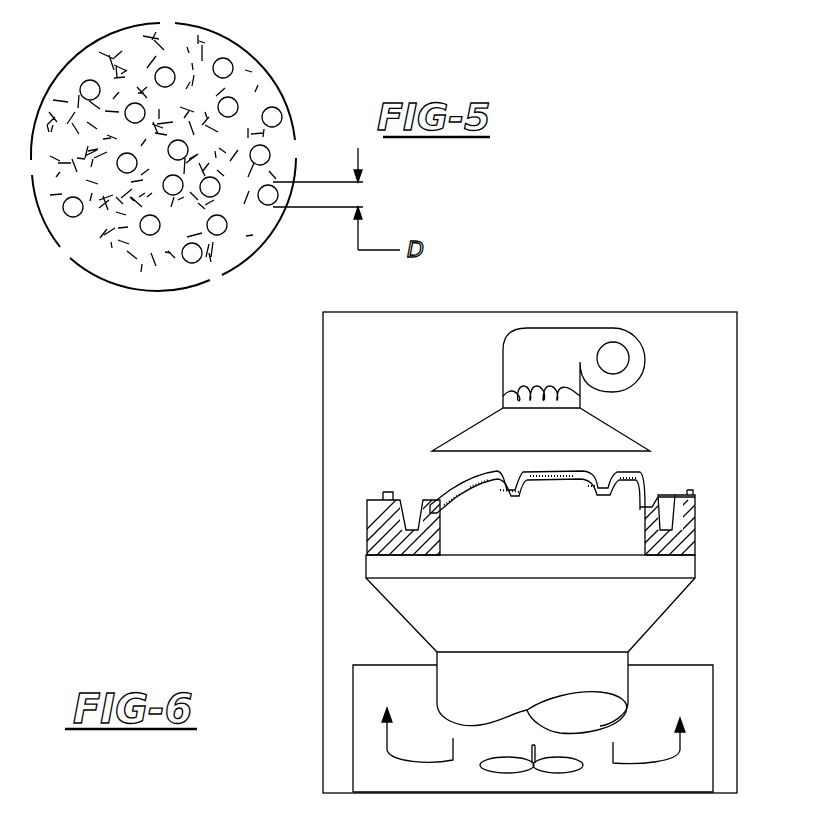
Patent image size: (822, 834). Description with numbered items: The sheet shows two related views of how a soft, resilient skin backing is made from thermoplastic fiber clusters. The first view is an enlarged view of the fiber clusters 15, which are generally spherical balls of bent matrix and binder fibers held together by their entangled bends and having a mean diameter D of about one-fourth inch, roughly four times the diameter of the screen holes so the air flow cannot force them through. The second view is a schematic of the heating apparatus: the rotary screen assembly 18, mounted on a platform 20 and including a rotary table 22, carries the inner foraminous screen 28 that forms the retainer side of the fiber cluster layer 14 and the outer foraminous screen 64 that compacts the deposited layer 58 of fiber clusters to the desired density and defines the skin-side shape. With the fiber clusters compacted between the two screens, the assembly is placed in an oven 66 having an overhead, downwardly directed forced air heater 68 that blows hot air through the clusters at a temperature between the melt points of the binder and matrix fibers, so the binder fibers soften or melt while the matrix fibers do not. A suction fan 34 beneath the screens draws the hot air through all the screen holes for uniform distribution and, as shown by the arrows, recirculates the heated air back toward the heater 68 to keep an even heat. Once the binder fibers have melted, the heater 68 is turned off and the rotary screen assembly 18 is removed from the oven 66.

In FIG. 6, the fiber cluster layer 14 is at (645, 472).
In FIG. 5, the fiber clusters 15 is at (270, 154).
In FIG. 6, the rotary screen assembly 18 is at (367, 500).
In FIG. 6, the platform 20 is at (370, 665).
In FIG. 6, the rotary table 22 is at (367, 538).
In FIG. 6, the inner foraminous screen 28 is at (560, 481).
In FIG. 6, the suction fan 34 is at (500, 757).
In FIG. 6, the deposited layer of fiber clusters 58 is at (580, 483).
In FIG. 6, the outer foraminous screen 64 is at (435, 480).
In FIG. 6, the oven 66 is at (323, 437).
In FIG. 6, the forced air heater 68 is at (603, 328).